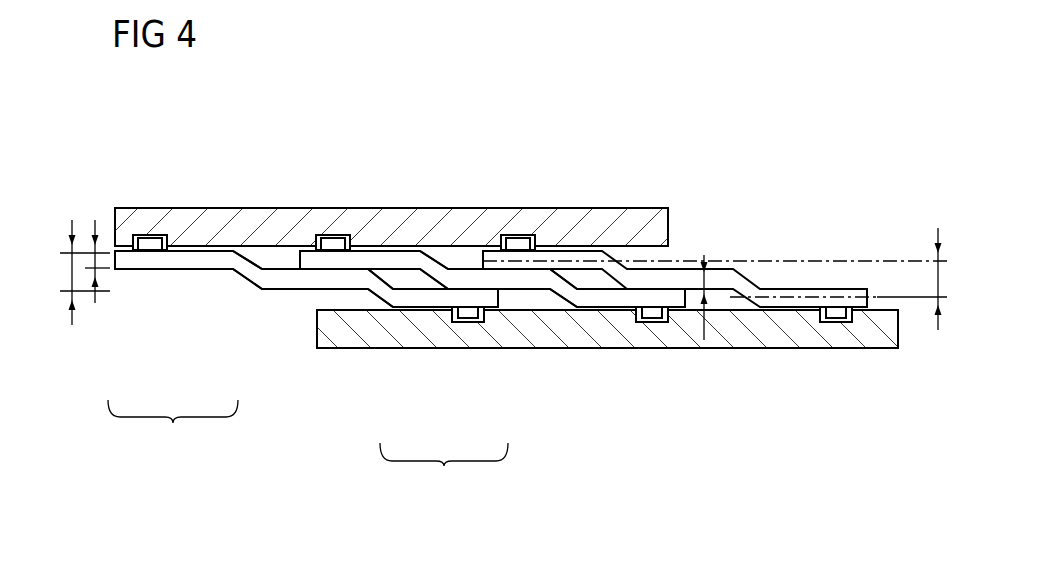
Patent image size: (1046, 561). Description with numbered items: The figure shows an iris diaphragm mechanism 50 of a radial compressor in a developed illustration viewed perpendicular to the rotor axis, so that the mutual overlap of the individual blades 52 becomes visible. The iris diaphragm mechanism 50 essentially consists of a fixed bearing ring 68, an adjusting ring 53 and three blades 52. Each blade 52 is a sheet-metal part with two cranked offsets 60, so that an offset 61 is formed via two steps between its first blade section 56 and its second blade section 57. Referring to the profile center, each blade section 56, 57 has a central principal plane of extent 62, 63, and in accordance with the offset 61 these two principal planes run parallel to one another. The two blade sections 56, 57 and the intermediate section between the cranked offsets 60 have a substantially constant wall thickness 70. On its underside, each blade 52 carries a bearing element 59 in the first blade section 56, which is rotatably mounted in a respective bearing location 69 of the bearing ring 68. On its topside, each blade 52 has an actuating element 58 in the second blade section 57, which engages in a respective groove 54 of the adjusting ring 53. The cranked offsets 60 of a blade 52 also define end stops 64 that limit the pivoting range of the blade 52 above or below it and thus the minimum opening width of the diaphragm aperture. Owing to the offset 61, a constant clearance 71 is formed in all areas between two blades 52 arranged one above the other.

The iris diaphragm mechanism 50 is at (758, 145).
The blade 52 is at (275, 277).
The adjusting ring 53 is at (418, 217).
The groove 54 is at (154, 238).
The first blade section 56 is at (444, 470).
The second blade section 57 is at (173, 429).
The actuating element 58 is at (150, 236).
The bearing element 59 is at (477, 321).
The cranked offset 60 is at (368, 300).
The offset 61 is at (70, 272).
The central principal plane of extent 62 is at (877, 300).
The central principal plane of extent 63 is at (806, 257).
The end stop 64 is at (430, 251).
The bearing ring 68 is at (343, 345).
The bearing location 69 is at (459, 323).
The wall thickness 70 is at (85, 266).
The constant clearance 71 is at (705, 338).